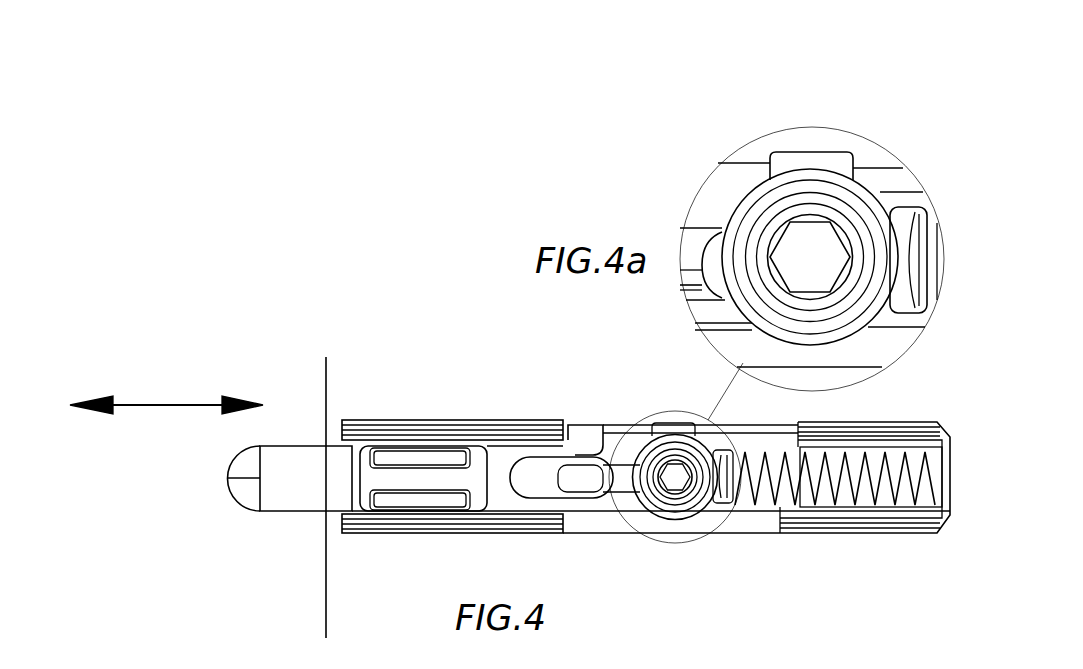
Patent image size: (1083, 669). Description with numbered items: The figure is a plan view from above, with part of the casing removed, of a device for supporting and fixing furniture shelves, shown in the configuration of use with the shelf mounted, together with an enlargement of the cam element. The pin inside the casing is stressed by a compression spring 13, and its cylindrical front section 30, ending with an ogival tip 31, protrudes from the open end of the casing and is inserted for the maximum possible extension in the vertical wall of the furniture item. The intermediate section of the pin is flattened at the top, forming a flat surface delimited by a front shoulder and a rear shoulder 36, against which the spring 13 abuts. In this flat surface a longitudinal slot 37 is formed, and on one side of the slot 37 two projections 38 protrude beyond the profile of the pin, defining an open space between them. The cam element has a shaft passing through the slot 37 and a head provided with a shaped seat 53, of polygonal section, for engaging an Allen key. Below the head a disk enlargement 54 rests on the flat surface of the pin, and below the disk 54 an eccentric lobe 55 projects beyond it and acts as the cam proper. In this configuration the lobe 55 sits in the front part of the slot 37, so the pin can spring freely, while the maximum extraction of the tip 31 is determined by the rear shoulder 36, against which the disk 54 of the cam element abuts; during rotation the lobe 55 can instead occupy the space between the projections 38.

In FIG. 4, the compression spring 13 is at (890, 478).
In FIG. 4, the cylindrical front section 30 is at (307, 498).
In FIG. 4, the ogival tip 31 is at (243, 495).
In FIG. 4, the longitudinal slot 37 is at (572, 473).
In FIG. 4A, the rear shoulder 36 is at (913, 255).
In FIG. 4A, the projections 38 is at (775, 162).
In FIG. 4A, the shaped seat 53 is at (817, 257).
In FIG. 4A, the disk enlargement 54 is at (858, 202).
In FIG. 4A, the eccentric lobe 55 is at (713, 248).